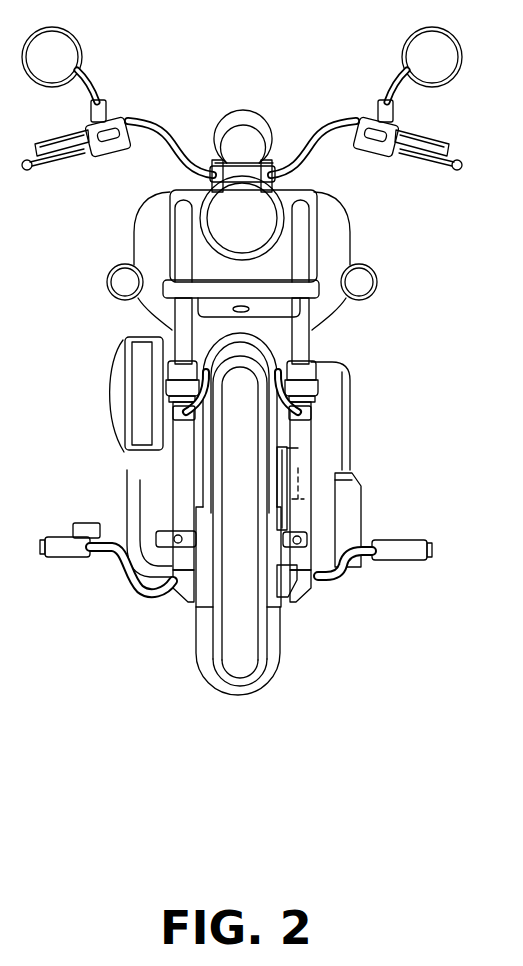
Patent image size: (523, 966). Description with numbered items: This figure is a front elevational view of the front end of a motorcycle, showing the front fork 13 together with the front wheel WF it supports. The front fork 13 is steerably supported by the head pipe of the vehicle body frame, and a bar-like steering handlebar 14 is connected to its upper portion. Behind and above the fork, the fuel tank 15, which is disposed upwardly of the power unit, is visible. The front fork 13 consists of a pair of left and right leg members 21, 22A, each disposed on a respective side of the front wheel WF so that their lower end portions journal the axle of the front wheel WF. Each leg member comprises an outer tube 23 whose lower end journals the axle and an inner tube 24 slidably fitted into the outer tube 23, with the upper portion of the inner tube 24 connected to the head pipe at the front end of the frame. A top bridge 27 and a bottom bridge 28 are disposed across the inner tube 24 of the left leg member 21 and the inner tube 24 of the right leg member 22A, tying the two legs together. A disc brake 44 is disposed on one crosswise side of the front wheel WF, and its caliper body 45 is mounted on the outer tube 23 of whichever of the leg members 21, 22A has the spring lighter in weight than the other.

The front fork 13 is at (244, 398).
The steering handlebar 14 is at (318, 143).
The fuel tank 15 is at (335, 250).
The left leg member 21 is at (315, 400).
The right leg member 22A is at (169, 458).
The outer tube 23 is at (244, 483).
The inner tube 24 is at (182, 240).
The top bridge 27 is at (181, 160).
The bottom bridge 28 is at (200, 313).
The disc brake 44 is at (288, 580).
The caliper body 45 is at (298, 468).
The front wheel WF is at (230, 652).